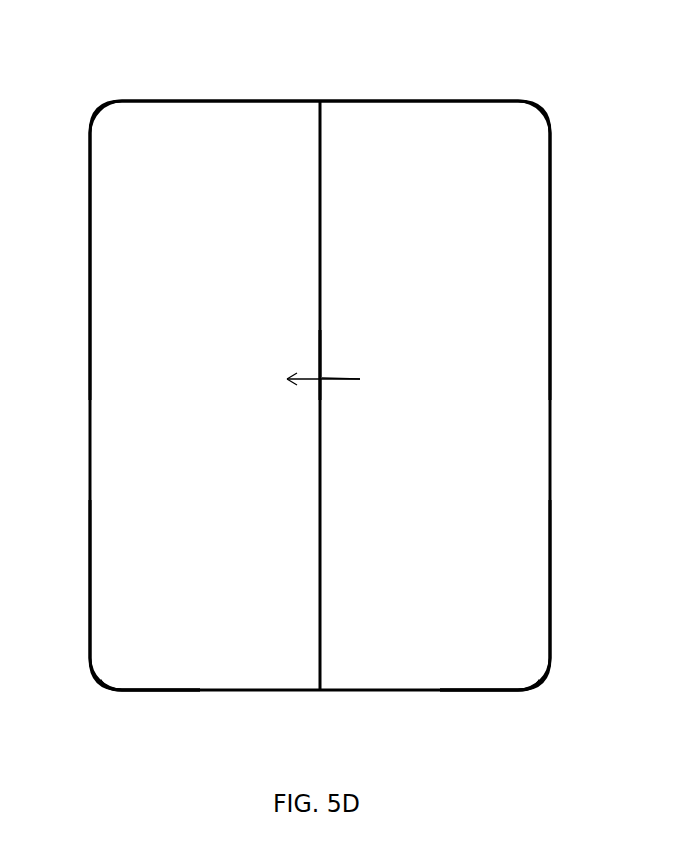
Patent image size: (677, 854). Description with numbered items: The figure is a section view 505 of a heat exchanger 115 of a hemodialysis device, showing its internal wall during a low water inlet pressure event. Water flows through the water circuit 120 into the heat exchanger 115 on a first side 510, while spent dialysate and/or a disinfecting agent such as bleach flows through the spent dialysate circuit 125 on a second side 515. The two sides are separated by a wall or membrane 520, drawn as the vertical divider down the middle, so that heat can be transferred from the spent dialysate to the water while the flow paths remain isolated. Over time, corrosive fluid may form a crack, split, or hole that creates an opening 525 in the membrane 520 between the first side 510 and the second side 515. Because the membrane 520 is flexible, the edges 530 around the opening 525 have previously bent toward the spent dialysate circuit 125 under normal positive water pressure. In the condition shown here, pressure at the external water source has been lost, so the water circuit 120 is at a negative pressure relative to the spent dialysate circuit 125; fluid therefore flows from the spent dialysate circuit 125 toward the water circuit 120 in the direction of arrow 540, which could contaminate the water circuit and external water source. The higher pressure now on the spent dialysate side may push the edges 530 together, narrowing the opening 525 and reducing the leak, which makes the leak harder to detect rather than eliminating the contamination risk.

The section view 505 is at (586, 57).
The heat exchanger 115 is at (583, 204).
The water circuit 120 is at (123, 590).
The spent dialysate circuit 125 is at (535, 585).
The first side 510 is at (148, 695).
The second side 515 is at (518, 692).
The membrane 520 is at (323, 490).
The edges 530 is at (325, 382).
The arrow 540 is at (358, 378).
The opening 525 is at (332, 357).